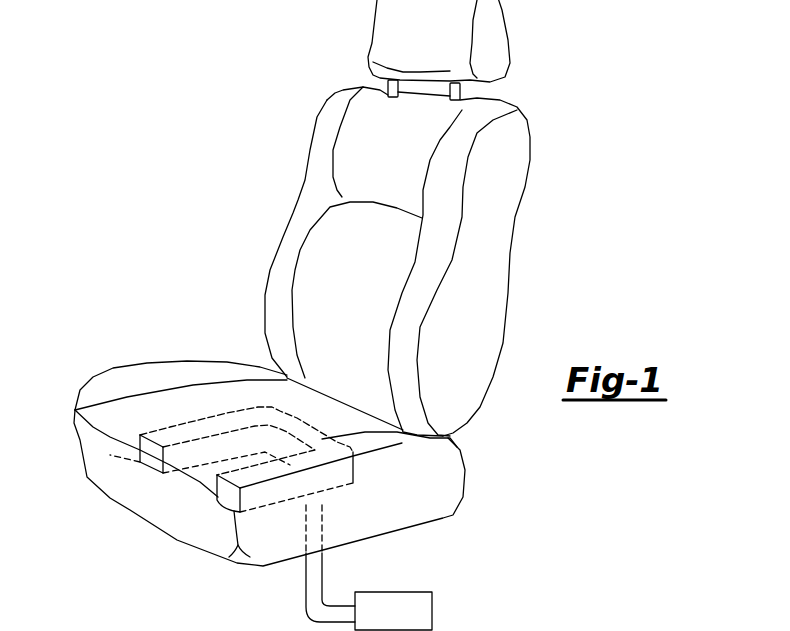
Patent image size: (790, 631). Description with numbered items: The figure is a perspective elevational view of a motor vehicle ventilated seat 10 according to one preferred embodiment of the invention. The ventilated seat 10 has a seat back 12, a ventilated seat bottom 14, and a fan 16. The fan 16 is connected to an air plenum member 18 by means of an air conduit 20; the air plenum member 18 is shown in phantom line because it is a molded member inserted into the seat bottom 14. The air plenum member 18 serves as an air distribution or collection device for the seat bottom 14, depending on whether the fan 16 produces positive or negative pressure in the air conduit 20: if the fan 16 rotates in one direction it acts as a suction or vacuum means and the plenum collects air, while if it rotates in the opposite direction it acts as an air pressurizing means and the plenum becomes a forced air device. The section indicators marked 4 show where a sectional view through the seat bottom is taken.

The ventilated seat 10 is at (548, 272).
The seat back 12 is at (505, 173).
The ventilated seat bottom 14 is at (440, 473).
The fan 16 is at (432, 603).
The air plenum member 18 is at (143, 467).
The air conduit 20 is at (305, 591).
The section line 4- 4 is at (90, 370).